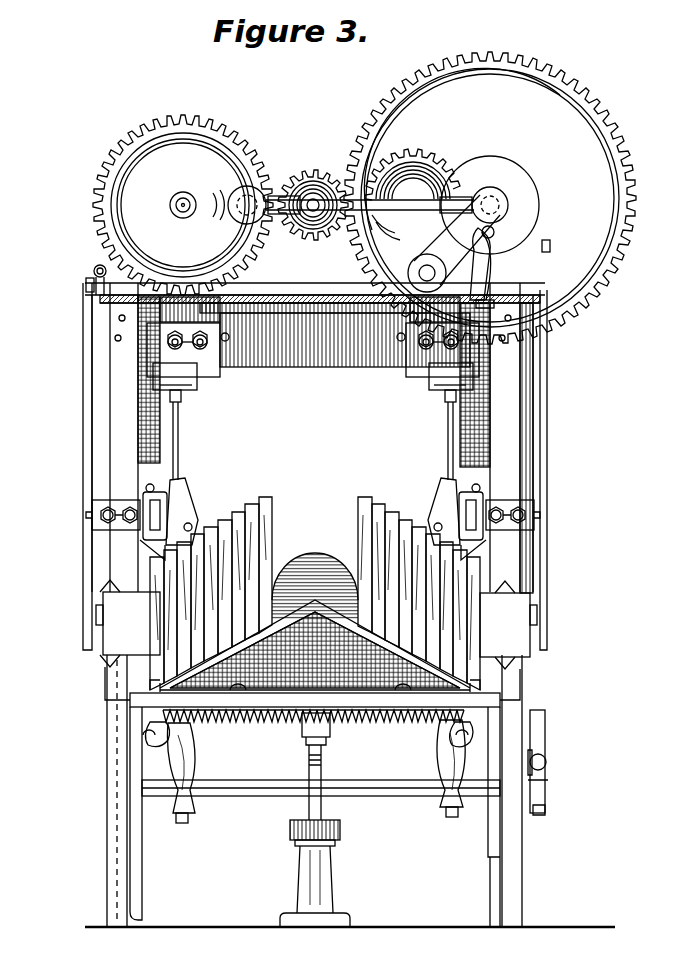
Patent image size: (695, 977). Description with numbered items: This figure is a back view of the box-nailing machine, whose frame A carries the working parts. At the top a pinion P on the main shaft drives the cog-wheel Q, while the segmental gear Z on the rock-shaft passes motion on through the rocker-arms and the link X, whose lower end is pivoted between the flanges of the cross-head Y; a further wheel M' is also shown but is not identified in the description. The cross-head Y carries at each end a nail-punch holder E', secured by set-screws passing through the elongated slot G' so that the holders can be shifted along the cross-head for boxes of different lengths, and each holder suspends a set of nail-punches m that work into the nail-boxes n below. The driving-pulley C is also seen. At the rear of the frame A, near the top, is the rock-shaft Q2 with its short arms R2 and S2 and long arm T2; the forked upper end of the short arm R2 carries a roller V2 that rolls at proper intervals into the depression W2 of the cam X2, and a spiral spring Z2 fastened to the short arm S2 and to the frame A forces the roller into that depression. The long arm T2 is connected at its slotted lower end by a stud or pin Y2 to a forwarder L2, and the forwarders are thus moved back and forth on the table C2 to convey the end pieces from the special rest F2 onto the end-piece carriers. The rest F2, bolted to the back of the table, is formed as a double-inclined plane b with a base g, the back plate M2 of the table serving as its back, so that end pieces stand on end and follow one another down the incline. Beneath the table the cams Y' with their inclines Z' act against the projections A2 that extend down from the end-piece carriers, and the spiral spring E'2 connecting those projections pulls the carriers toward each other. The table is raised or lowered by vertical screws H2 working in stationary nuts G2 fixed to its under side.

The cog-wheel Q is at (183, 205).
The pinion P is at (313, 191).
The large gear wheel M' is at (490, 198).
The segmental gear Z is at (412, 189).
The cam X2 is at (473, 224).
The depression W2 is at (400, 208).
The roller V2 is at (60, 626).
The short arm R2 is at (535, 282).
The frame A is at (350, 587).
The rock-shaft Q2 is at (315, 290).
The spiral spring Z2 is at (95, 268).
The short arm S2 is at (88, 283).
The elongated slot G' is at (316, 350).
The nail-punch holder E' is at (313, 380).
The nail-punches m is at (447, 441).
The cross-head Y is at (315, 332).
The long arm T2 is at (547, 440).
The nail-boxes n is at (313, 519).
The back plate M2 is at (315, 593).
The double-inclined plane b is at (315, 646).
The forwarders L2 is at (316, 640).
The special support or rest F2 is at (565, 666).
The table C2 is at (552, 696).
The base g is at (315, 691).
The spiral spring E'2 is at (313, 732).
The stationary nuts G2 is at (313, 731).
The inclines Z' is at (309, 738).
The cams Y' is at (188, 773).
The projections A2 is at (309, 742).
The link X is at (321, 781).
The vertical screws H2 is at (328, 782).
The driving-pulley C is at (313, 873).
The stud or pin Y2 is at (445, 768).